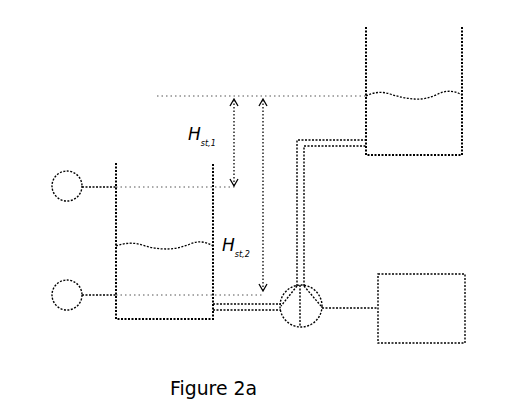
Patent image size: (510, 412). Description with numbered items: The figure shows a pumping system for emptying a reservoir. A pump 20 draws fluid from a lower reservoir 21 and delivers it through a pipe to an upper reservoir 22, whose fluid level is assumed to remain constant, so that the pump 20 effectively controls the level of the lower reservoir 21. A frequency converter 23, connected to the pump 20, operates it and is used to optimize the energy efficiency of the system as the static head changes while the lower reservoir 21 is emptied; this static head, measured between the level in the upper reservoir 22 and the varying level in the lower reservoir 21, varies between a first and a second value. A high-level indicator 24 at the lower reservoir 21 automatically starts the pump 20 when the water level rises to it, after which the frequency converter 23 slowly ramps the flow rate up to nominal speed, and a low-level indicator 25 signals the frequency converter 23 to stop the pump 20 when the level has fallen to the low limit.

The pump 20 is at (322, 286).
The lower reservoir 21 is at (163, 328).
The upper reservoir 22 is at (366, 60).
The frequency converter 23 is at (430, 319).
The high-level indicator 24 is at (77, 171).
The low-level indicator 25 is at (73, 310).